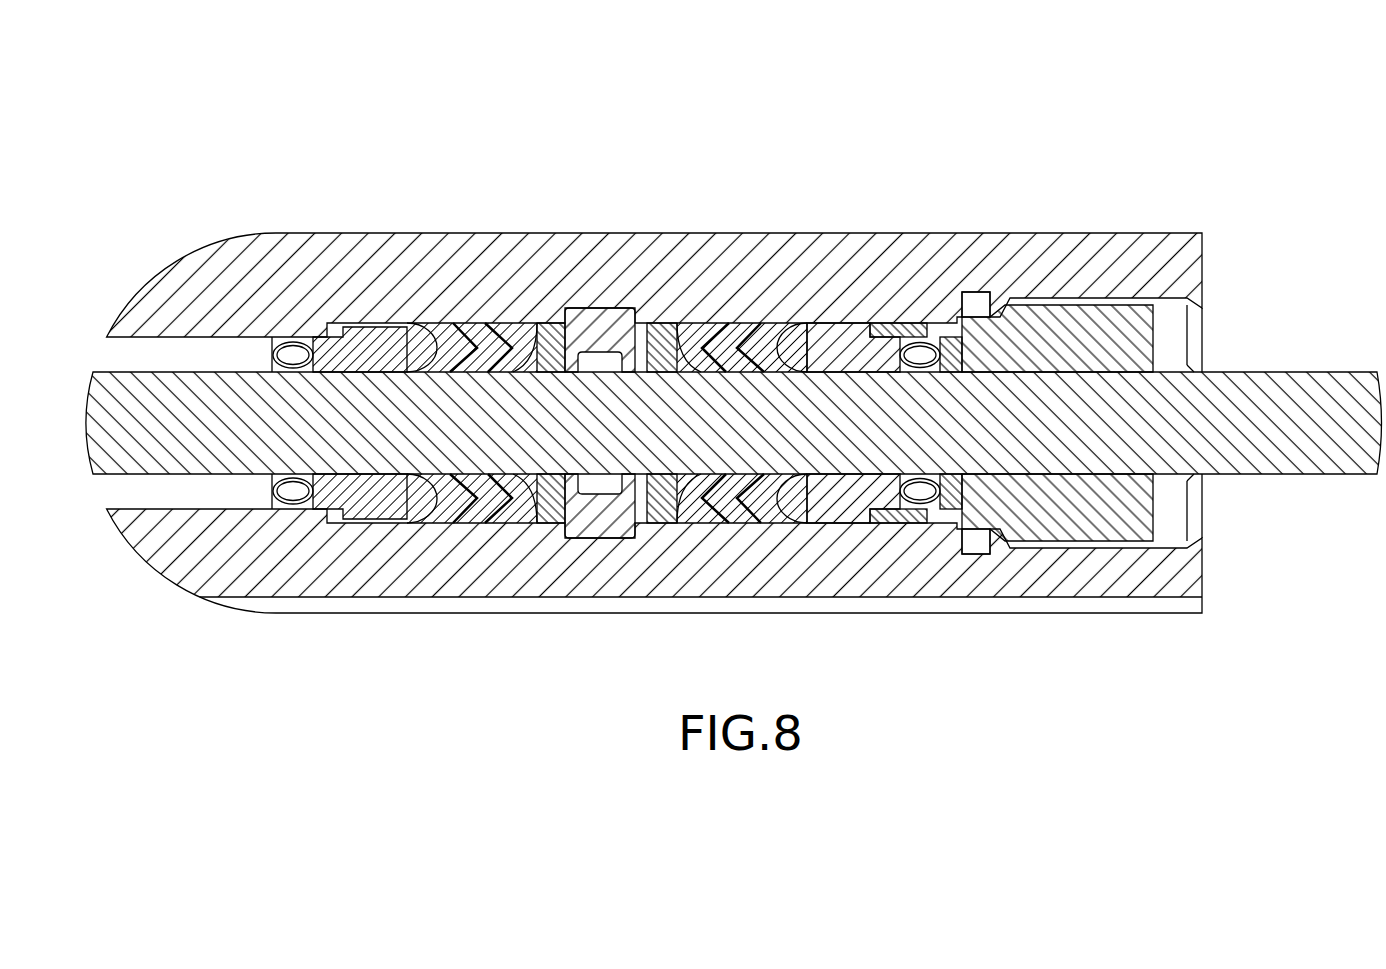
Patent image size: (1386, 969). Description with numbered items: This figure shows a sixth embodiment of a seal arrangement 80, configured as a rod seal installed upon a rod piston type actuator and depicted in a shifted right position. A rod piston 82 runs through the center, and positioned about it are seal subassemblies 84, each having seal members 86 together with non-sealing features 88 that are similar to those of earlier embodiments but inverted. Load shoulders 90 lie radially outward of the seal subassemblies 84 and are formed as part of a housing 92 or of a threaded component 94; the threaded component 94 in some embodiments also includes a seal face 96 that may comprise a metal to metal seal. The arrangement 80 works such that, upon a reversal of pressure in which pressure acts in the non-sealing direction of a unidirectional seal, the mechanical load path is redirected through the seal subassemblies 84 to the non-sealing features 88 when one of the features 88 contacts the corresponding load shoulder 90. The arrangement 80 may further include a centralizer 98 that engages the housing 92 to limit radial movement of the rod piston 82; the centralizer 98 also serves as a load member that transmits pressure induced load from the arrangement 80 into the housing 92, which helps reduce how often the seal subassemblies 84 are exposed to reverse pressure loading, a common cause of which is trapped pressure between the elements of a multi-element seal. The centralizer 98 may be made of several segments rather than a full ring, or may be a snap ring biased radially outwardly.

The seal arrangement 80 is at (813, 138).
The rod piston 82 is at (1270, 398).
The seal subassemblies 84 is at (847, 360).
The seal members 86 is at (925, 335).
The non-sealing features 88 is at (820, 327).
The load shoulders 90 is at (330, 325).
The housing 92 is at (263, 258).
The threaded component 94 is at (1073, 328).
The seal face 96 is at (945, 528).
The centralizer 98 is at (585, 322).